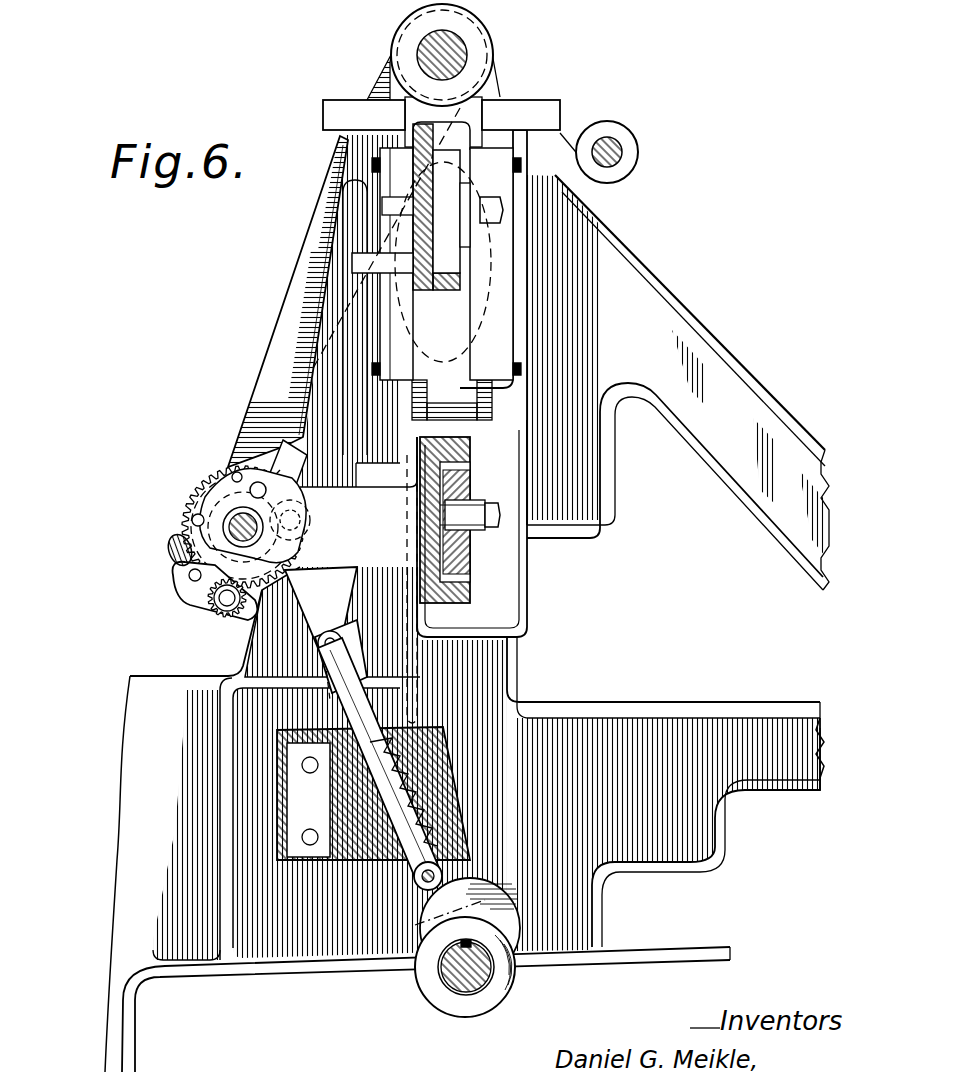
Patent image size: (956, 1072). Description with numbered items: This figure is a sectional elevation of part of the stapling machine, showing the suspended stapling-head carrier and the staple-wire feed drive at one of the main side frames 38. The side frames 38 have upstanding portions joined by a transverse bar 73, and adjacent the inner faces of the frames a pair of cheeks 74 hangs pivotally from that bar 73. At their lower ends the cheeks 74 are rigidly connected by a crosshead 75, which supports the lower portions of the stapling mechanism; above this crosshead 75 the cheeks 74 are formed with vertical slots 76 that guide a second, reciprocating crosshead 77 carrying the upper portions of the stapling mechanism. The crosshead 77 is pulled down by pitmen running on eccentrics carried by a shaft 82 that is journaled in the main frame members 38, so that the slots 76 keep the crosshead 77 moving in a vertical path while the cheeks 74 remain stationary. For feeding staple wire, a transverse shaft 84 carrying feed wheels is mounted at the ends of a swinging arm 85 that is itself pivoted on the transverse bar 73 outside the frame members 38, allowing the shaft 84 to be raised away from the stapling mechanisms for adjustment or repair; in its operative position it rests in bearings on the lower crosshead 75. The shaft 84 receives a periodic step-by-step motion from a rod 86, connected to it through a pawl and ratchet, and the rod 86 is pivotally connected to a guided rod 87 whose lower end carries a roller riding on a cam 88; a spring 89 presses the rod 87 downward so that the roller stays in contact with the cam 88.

The main side frame 38 is at (630, 283).
The transverse bar 73 is at (457, 50).
The cheek 74 is at (500, 412).
The crosshead 75 is at (470, 592).
The vertical slot 76 is at (455, 330).
The crosshead 77 is at (432, 215).
The shaft 82 is at (455, 973).
The transverse shaft 84 is at (233, 520).
The swinging arm 85 is at (272, 353).
The rod 86 is at (360, 598).
The guided rod 87 is at (385, 795).
The cam 88 is at (440, 895).
The spring 89 is at (440, 775).